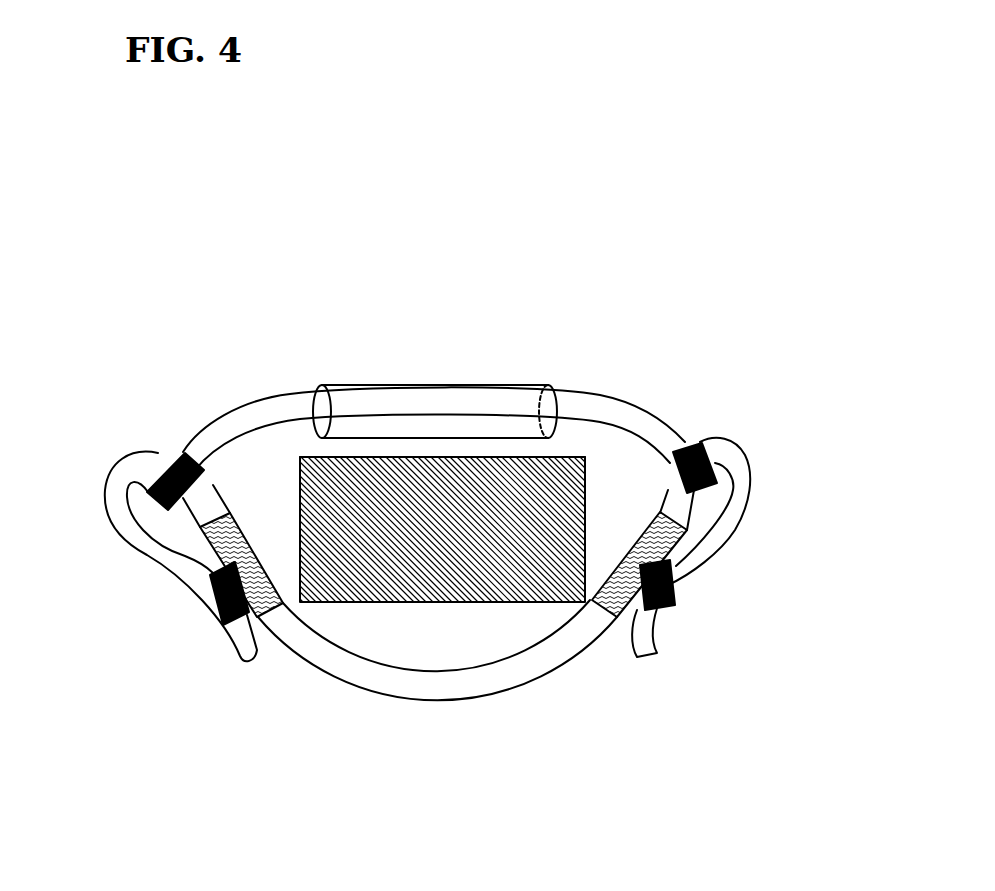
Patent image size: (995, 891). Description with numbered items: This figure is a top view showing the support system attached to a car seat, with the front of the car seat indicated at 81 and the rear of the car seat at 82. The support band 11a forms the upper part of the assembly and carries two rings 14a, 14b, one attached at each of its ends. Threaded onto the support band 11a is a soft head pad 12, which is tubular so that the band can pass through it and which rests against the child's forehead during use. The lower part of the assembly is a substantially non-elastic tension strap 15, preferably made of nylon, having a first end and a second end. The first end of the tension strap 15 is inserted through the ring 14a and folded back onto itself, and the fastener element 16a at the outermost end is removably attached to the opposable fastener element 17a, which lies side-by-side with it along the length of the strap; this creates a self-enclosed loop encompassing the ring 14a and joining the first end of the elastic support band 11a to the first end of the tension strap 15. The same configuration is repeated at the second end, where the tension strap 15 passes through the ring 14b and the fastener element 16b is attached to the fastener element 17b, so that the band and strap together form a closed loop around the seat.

The support band 11a is at (250, 422).
The head pad 12 is at (453, 388).
The ring 14a is at (175, 468).
The ring 14b is at (690, 448).
The tension strap 15 is at (490, 673).
The fastener element 16a is at (222, 603).
The fastener element 16b is at (668, 588).
The fastener element 17a is at (247, 547).
The fastener element 17b is at (658, 562).
The front of the car seat 81 is at (386, 456).
The rear of the car seat 82 is at (373, 603).